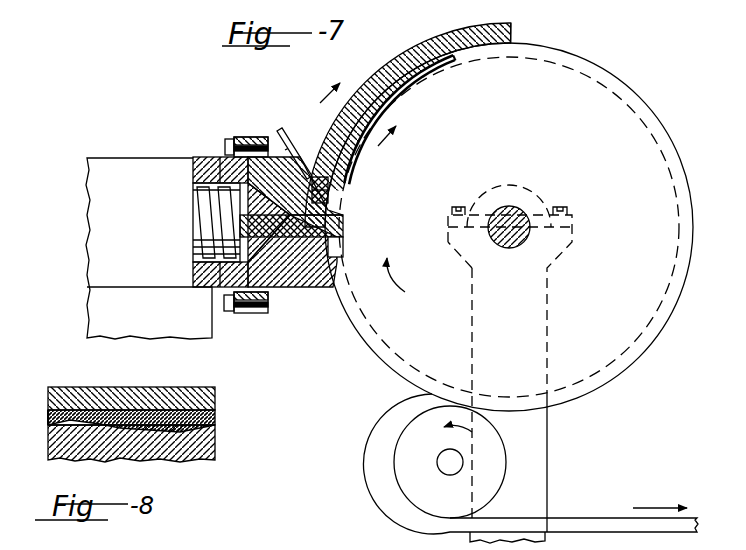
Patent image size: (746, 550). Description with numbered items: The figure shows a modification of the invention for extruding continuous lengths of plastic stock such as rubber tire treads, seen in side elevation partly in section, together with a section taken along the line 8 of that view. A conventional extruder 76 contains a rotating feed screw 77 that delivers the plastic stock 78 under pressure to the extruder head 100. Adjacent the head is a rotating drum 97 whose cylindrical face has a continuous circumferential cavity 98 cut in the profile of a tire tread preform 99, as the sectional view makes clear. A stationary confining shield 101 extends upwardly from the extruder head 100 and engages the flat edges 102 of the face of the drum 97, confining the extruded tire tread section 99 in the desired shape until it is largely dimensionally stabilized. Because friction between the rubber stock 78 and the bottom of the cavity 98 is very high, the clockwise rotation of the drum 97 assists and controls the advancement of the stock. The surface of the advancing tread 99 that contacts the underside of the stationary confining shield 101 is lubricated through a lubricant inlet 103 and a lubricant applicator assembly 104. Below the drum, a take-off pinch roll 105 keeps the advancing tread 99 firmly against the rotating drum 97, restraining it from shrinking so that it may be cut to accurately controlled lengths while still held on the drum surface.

In FIG. 7, the extruder 76 is at (120, 170).
In FIG. 7, the rotating feed screw 77 is at (198, 218).
In FIG. 7, the plastic stock 78 is at (217, 164).
In FIG. 7, the section line 8- 8 is at (355, 117).
In FIG. 7, the rotating drum 97 is at (618, 106).
In FIG. 8, the rotating drum 97 is at (215, 448).
In FIG. 7, the circumferential cavity 98 is at (576, 63).
In FIG. 8, the circumferential cavity 98 is at (187, 426).
In FIG. 7, the tire tread preform 99 is at (590, 509).
In FIG. 8, the tire tread preform 99 is at (133, 412).
In FIG. 7, the extruder head 100 is at (277, 140).
In FIG. 7, the stationary confining shield 101 is at (379, 76).
In FIG. 8, the stationary confining shield 101 is at (88, 378).
In FIG. 7, the flat edges 102 is at (511, 35).
In FIG. 8, the flat edges 102 is at (52, 418).
In FIG. 7, the lubricant inlet 103 is at (283, 130).
In FIG. 7, the lubricant applicator assembly 104 is at (316, 160).
In FIG. 7, the take-off pinch roll 105 is at (497, 473).